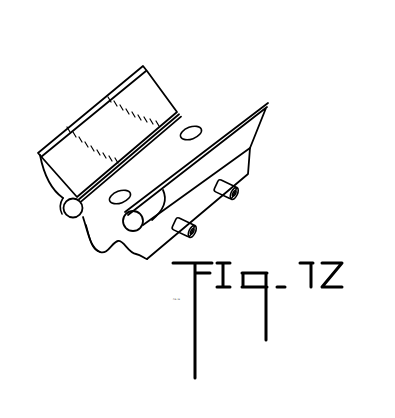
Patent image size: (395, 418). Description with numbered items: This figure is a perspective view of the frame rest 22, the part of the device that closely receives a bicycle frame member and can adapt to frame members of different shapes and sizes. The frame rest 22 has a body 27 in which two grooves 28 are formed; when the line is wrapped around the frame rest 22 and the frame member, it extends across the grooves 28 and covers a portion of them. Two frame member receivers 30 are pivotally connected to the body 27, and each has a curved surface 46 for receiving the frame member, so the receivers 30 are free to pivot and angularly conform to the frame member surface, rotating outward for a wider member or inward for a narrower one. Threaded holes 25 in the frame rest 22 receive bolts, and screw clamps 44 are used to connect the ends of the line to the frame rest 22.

The frame rest 22 is at (249, 60).
The threaded holes 25 is at (122, 208).
The body 27 is at (62, 212).
The grooves 28 is at (108, 249).
The frame member receivers 30 is at (80, 122).
The screw clamps 44 is at (200, 233).
The curved surface 46 is at (127, 139).